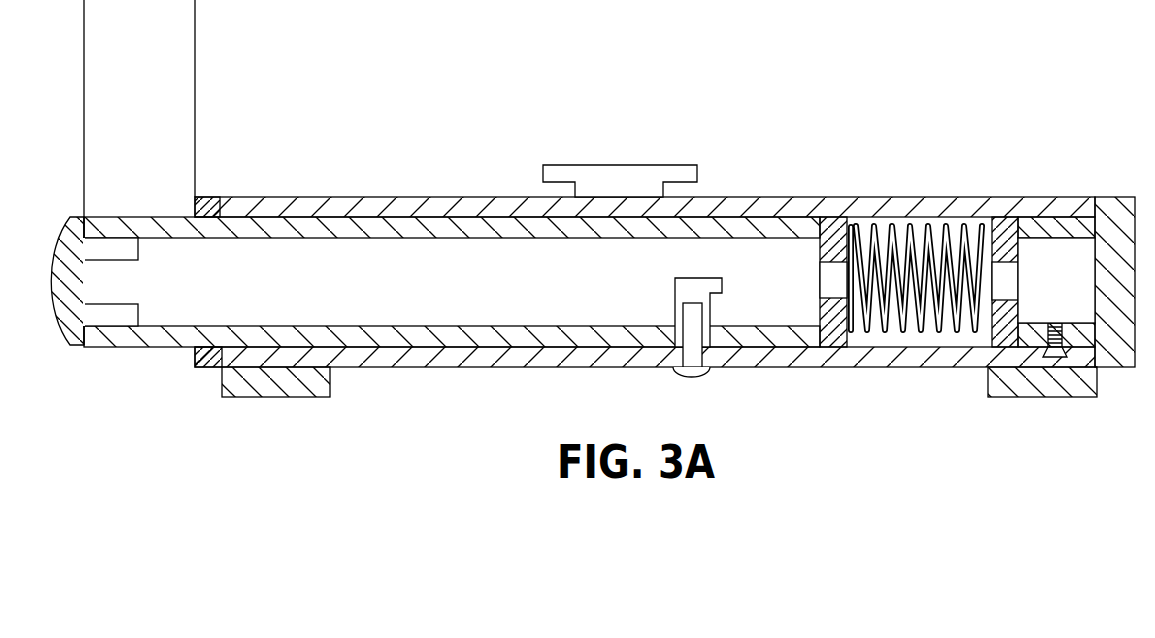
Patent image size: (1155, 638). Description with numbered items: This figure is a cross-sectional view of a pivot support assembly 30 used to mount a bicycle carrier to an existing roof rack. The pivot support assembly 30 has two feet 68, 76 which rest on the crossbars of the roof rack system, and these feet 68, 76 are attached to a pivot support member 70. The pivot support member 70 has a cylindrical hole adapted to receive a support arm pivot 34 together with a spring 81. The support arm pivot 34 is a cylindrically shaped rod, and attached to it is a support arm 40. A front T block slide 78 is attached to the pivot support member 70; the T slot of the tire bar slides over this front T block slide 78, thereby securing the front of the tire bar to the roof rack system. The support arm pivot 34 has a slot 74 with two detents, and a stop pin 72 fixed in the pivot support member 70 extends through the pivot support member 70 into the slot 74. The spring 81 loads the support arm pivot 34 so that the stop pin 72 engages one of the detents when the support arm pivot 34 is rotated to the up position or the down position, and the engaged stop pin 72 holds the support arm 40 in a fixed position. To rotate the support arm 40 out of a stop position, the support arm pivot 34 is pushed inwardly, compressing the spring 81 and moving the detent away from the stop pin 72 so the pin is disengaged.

The pivot support assembly 30 is at (800, 153).
The support arm pivot 34 is at (130, 347).
The support arm 40 is at (197, 13).
The foot 68 is at (1040, 397).
The pivot support member 70 is at (985, 215).
The stop pin 72 is at (700, 377).
The slot 74 is at (683, 292).
The foot 76 is at (300, 397).
The front T block slide 78 is at (583, 165).
The spring 81 is at (890, 224).